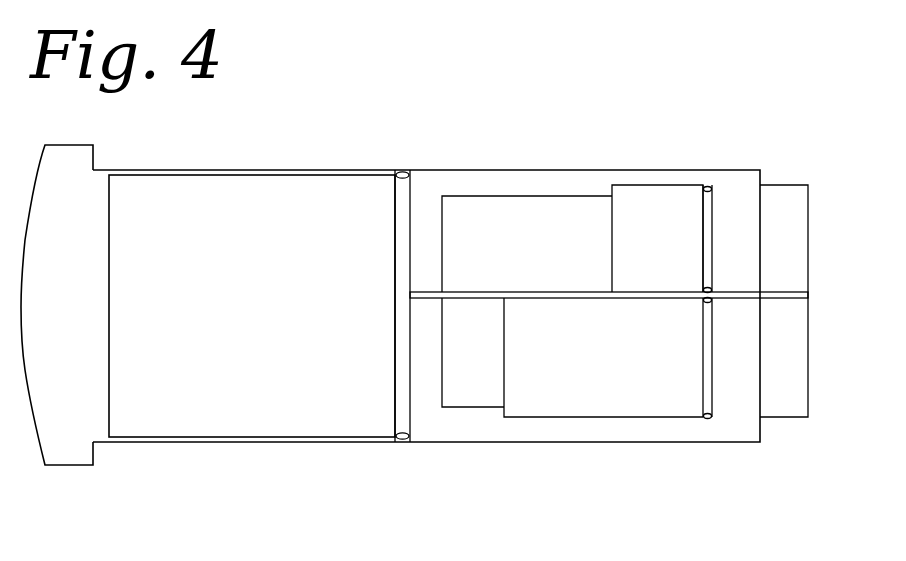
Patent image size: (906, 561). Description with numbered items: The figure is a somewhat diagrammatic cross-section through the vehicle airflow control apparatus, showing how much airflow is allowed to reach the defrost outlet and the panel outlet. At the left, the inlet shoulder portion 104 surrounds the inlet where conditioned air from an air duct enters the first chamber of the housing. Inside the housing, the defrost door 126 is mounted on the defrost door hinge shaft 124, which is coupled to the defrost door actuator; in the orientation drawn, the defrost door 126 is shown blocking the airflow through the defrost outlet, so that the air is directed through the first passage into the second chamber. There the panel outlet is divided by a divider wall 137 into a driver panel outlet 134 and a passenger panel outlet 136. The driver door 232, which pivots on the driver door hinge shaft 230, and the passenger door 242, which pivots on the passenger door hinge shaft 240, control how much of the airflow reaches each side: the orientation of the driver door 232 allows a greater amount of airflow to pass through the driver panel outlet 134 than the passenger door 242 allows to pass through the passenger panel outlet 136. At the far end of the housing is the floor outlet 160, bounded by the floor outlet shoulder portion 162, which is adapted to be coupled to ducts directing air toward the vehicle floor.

The inlet shoulder portion 104 is at (37, 450).
The defrost door 126 is at (273, 200).
The defrost door hinge shaft 124 is at (393, 202).
The driver panel outlet 134 is at (537, 215).
The divider wall 137 is at (484, 290).
The passenger panel outlet 136 is at (493, 392).
The passenger door 242 is at (652, 402).
The driver door 232 is at (650, 195).
The driver door hinge shaft 230 is at (712, 190).
The passenger door hinge shaft 240 is at (712, 357).
The floor outlet shoulder portion 162 is at (797, 232).
The floor outlet 160 is at (816, 308).